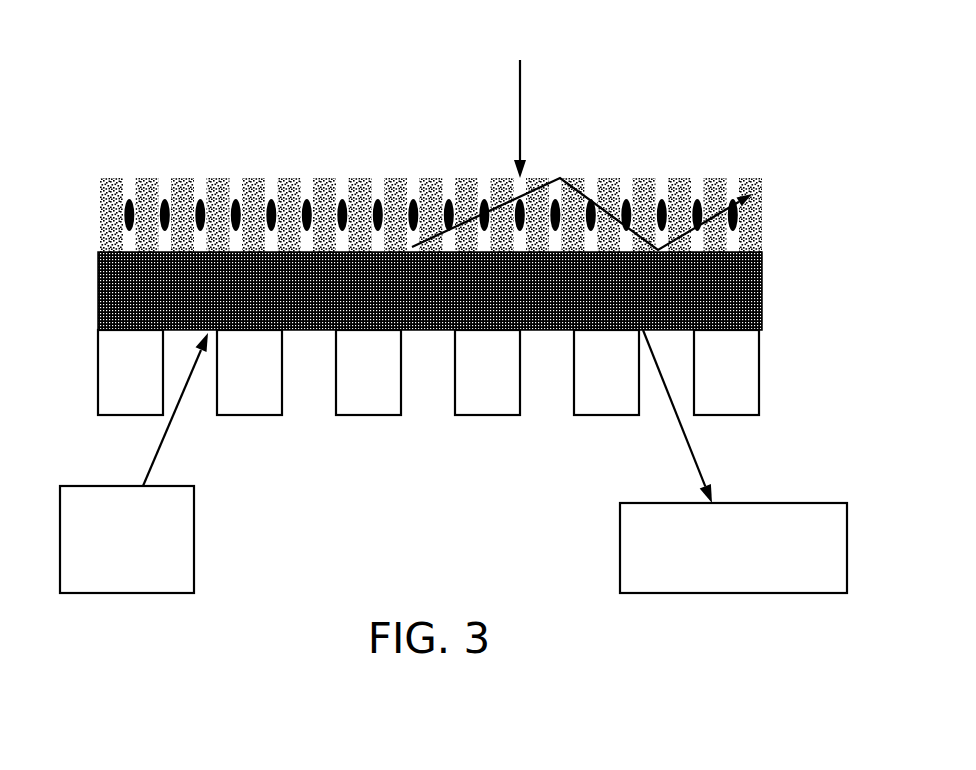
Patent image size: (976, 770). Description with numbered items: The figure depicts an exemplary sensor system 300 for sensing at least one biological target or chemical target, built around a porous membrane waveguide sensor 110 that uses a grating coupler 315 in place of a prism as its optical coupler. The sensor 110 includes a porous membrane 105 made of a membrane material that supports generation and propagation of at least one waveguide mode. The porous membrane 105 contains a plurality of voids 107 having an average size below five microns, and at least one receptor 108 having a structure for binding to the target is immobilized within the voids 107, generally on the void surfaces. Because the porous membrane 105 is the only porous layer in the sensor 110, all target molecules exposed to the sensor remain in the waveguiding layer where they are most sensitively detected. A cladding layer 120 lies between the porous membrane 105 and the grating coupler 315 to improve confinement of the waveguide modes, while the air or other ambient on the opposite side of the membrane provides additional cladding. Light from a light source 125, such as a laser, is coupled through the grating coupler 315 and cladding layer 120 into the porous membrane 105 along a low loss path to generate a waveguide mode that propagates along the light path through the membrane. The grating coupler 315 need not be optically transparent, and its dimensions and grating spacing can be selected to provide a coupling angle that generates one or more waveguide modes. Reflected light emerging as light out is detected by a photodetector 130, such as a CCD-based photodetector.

The sensor system 300 is at (434, 360).
The porous membrane 105 is at (468, 163).
The voids 107 is at (626, 162).
The receptor 108 is at (690, 200).
The porous membrane waveguide sensor 110 is at (437, 233).
The cladding layer 120 is at (783, 307).
The light source 125 is at (127, 539).
The photodetector 130 is at (733, 548).
The grating coupler 315 is at (80, 410).